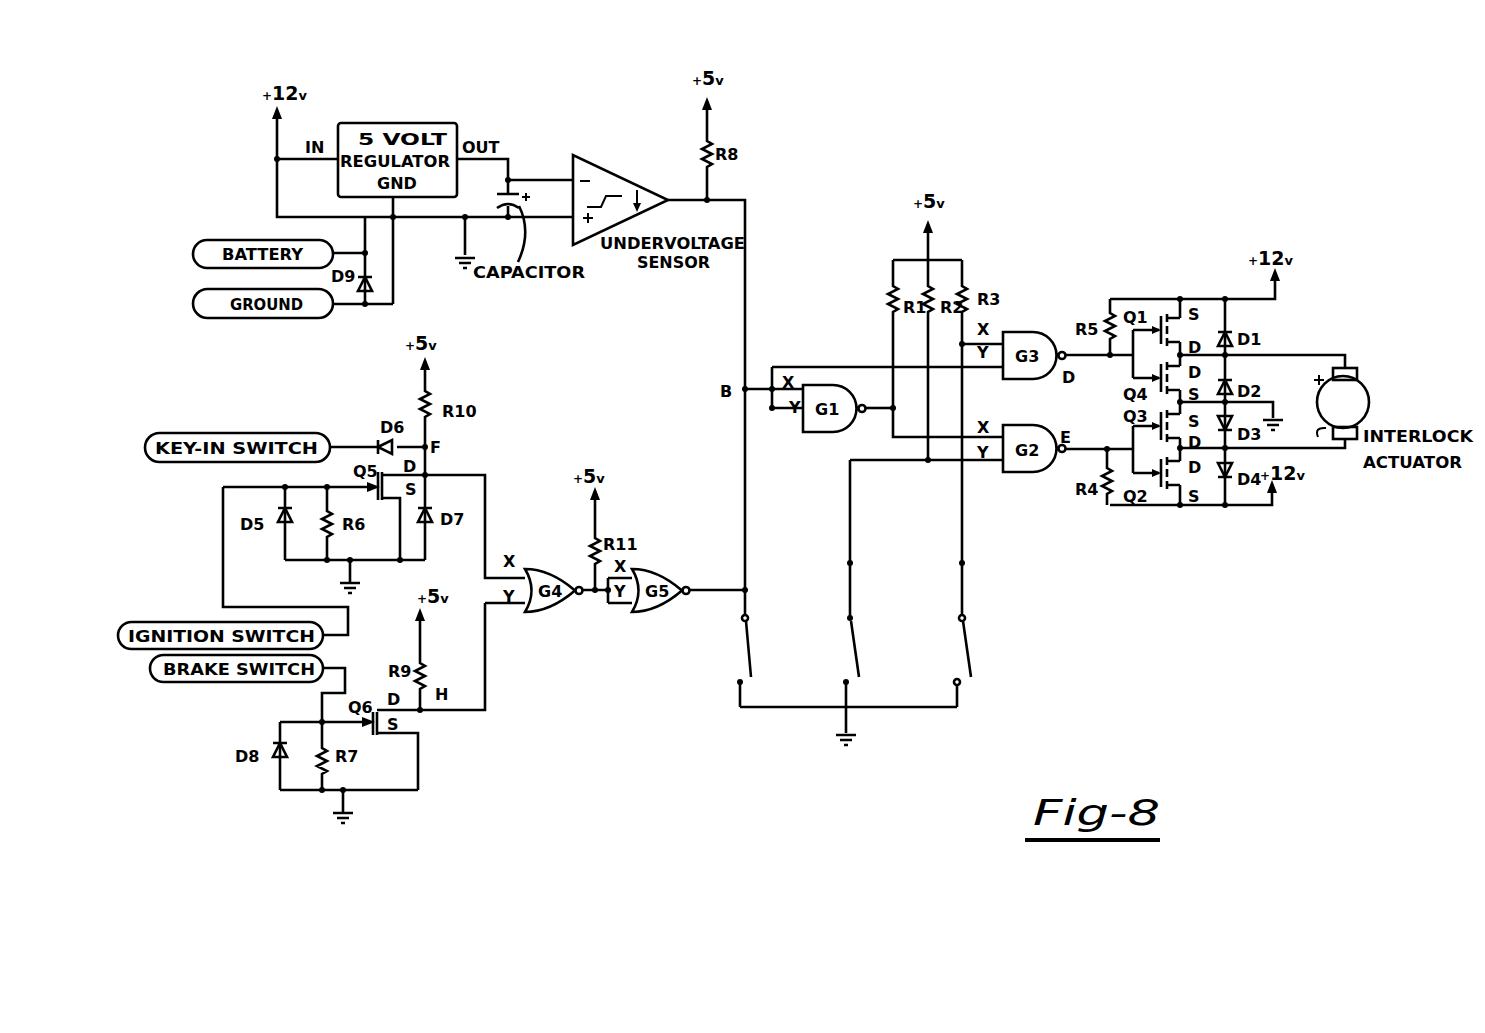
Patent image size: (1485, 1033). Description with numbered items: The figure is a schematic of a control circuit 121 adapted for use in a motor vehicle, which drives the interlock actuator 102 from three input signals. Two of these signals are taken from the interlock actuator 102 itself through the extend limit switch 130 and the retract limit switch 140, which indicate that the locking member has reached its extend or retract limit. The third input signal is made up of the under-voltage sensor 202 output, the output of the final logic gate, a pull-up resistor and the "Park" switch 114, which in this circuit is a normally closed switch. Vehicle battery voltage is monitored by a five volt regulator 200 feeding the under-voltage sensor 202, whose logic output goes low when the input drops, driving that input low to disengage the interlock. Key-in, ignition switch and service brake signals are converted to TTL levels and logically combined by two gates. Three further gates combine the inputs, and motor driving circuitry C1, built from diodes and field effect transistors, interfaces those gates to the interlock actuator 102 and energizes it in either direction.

The 5 volt regulator 200 is at (393, 123).
The under-voltage sensor 202 is at (612, 170).
The control circuit 121 is at (1038, 279).
The motor driving circuitry C1 is at (1165, 291).
The interlock actuator 102 is at (1378, 395).
The "Park" switch 114 is at (728, 652).
The retract limit switch 140 is at (833, 660).
The extend limit switch 130 is at (980, 688).